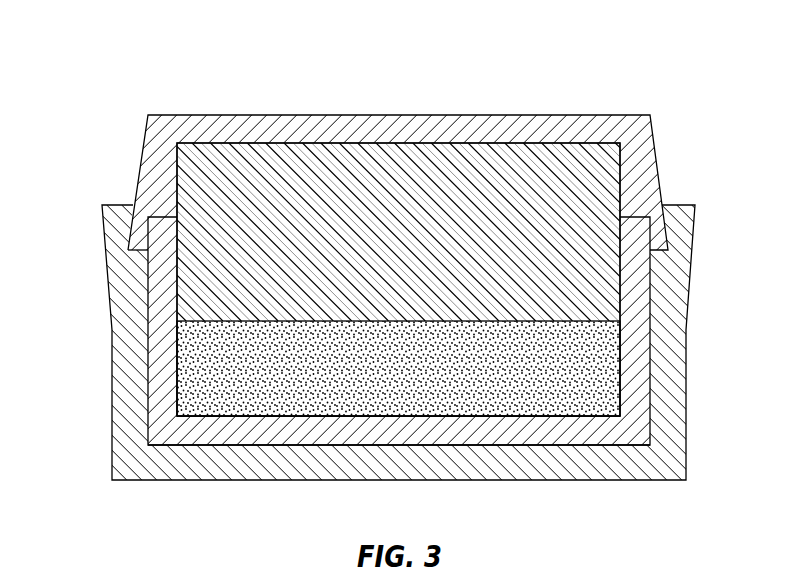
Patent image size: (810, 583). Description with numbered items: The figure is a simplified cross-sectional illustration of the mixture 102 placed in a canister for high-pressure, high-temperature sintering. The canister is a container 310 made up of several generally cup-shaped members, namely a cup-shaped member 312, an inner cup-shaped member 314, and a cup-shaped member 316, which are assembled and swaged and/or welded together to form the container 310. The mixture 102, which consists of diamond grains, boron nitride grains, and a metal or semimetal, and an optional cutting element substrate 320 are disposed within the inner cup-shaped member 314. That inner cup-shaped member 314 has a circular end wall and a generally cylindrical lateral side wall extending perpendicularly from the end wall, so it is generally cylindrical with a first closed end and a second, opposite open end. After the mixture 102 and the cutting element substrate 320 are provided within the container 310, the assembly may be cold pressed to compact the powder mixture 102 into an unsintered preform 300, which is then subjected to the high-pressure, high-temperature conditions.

The unsintered preform 300 is at (403, 190).
The container 310 is at (137, 94).
The cup-shaped member 312 is at (130, 333).
The inner cup-shaped member 314 is at (246, 428).
The cup-shaped member 316 is at (148, 168).
The cutting element substrate 320 is at (588, 176).
The mixture 102 is at (580, 352).